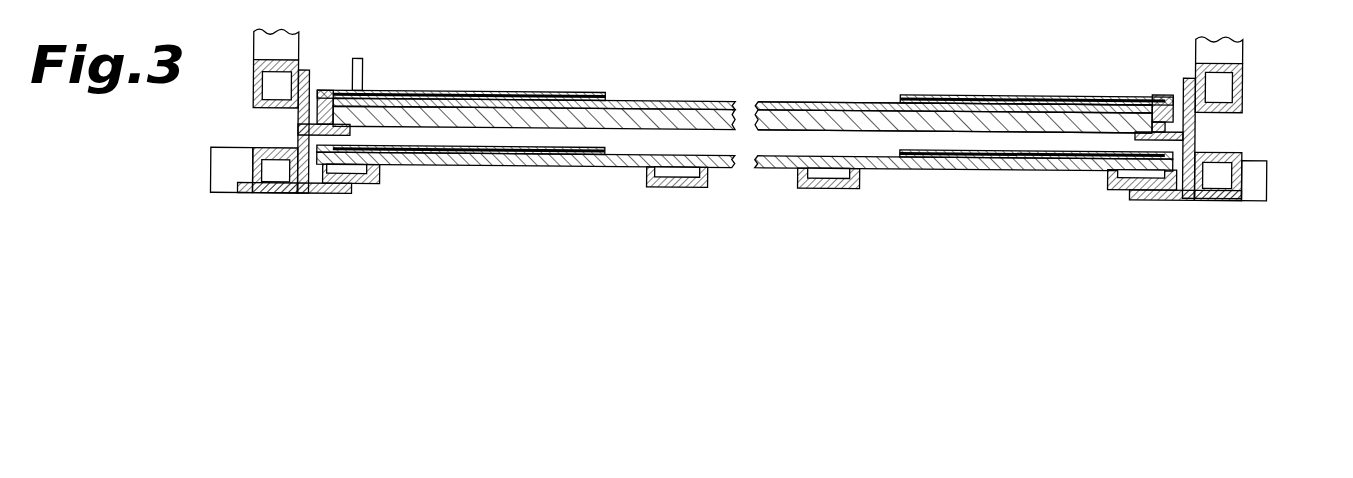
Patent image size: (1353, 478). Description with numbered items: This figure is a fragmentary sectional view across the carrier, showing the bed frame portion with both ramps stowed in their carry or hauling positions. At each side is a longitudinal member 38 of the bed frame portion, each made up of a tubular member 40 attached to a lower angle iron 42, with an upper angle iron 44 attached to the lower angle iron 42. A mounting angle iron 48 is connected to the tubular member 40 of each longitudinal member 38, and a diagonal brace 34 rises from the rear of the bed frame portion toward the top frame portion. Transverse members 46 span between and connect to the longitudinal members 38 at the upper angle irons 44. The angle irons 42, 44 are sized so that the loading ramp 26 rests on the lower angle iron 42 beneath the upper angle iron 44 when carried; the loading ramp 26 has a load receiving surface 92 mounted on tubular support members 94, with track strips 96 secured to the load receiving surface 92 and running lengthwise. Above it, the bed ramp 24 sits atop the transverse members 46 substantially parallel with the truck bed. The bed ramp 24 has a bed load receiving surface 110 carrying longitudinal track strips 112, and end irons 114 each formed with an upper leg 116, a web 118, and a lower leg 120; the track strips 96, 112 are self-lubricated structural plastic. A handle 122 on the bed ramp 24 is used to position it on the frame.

The bed ramp 24 is at (620, 103).
The loading ramp 26 is at (560, 166).
The diagonal brace 34 is at (253, 72).
The longitudinal member 38 is at (236, 194).
The tubular member 40 is at (252, 172).
The lower angle iron 42 is at (330, 193).
The upper angle iron 44 is at (312, 82).
The transverse member 46 is at (693, 103).
The mounting angle iron 48 is at (211, 160).
The load receiving surface 92 is at (645, 182).
The loading ramp tubular support member 94 is at (380, 184).
The track strip 96 is at (585, 152).
The bed load receiving surface 110 is at (840, 103).
The track strip 112 is at (496, 92).
The end iron 114 is at (322, 92).
The upper leg 116 is at (1147, 120).
The web 118 is at (297, 124).
The lower leg 120 is at (1107, 128).
The handle 122 is at (362, 77).